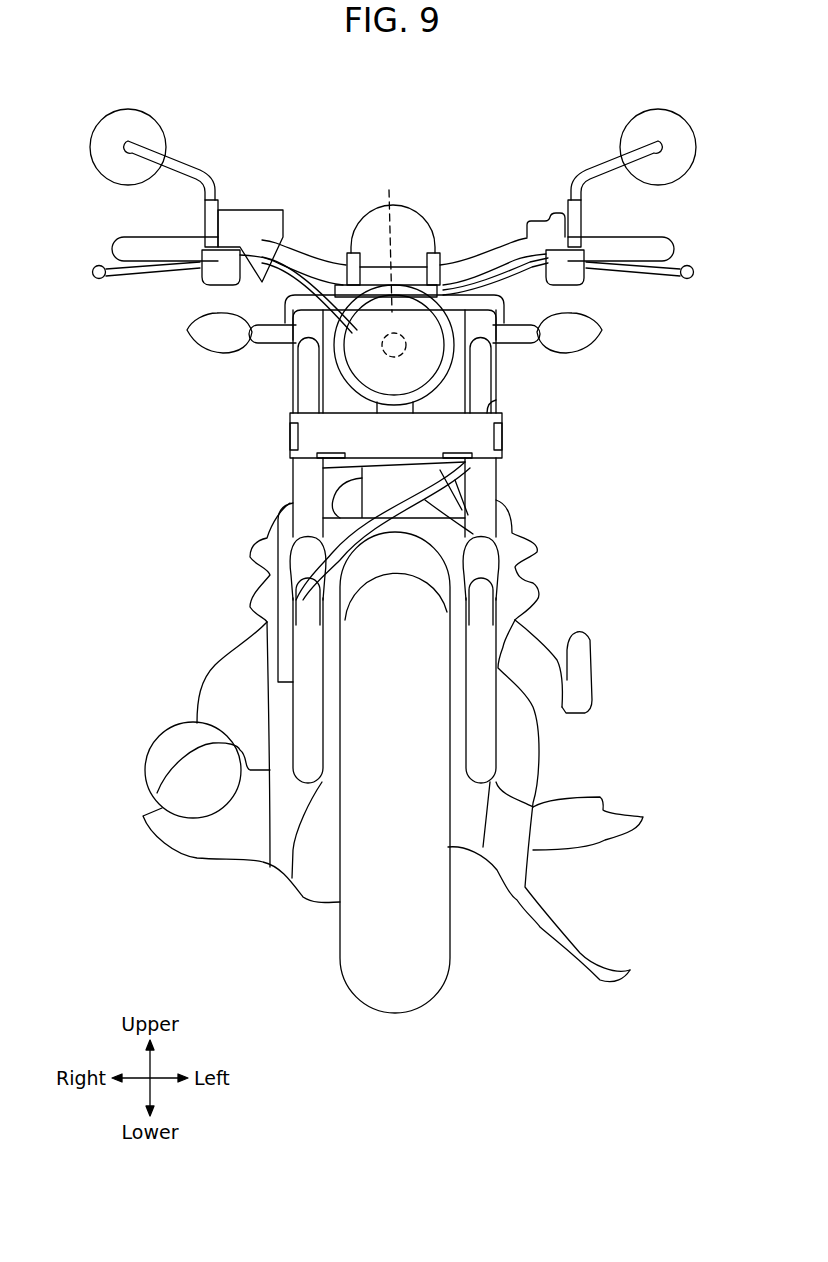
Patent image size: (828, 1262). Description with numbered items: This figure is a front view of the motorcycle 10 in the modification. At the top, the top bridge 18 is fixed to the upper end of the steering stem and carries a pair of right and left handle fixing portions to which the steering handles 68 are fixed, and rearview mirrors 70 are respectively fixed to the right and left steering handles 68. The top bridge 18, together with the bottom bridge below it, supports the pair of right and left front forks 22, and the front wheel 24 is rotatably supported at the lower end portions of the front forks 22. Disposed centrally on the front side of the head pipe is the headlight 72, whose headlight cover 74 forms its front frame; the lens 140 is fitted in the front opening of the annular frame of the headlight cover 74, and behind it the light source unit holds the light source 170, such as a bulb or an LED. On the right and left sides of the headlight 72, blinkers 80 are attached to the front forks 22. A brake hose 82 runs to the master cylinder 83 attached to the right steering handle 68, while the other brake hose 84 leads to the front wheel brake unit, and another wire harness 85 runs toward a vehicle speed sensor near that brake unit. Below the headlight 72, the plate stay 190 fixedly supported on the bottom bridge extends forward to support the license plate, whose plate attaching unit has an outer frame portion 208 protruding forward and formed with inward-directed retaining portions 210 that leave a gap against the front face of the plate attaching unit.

The motorcycle 10 is at (292, 71).
The top bridge 18 is at (500, 304).
The front forks 22 is at (308, 482).
The front wheel 24 is at (395, 1012).
The steering handles 68 is at (147, 247).
The rearview mirrors 70 is at (135, 107).
The headlight 72 is at (453, 358).
The headlight cover 74 is at (347, 377).
The blinkers 80 is at (192, 338).
The brake hose 82 is at (293, 281).
The master cylinder 83 is at (248, 227).
The brake hose 84 is at (345, 512).
The wire harness 85 is at (477, 537).
The lens 140 is at (393, 236).
The light source 170 is at (381, 350).
The plate stay 190 is at (480, 422).
The frame portion 208 is at (487, 412).
The retaining portions 210 is at (502, 438).